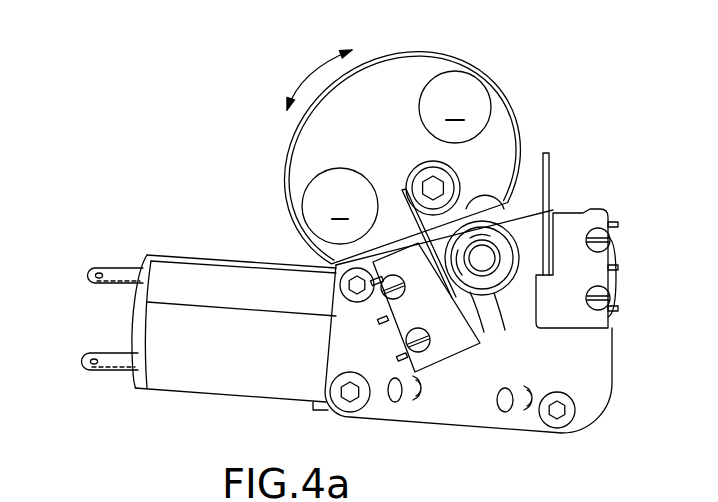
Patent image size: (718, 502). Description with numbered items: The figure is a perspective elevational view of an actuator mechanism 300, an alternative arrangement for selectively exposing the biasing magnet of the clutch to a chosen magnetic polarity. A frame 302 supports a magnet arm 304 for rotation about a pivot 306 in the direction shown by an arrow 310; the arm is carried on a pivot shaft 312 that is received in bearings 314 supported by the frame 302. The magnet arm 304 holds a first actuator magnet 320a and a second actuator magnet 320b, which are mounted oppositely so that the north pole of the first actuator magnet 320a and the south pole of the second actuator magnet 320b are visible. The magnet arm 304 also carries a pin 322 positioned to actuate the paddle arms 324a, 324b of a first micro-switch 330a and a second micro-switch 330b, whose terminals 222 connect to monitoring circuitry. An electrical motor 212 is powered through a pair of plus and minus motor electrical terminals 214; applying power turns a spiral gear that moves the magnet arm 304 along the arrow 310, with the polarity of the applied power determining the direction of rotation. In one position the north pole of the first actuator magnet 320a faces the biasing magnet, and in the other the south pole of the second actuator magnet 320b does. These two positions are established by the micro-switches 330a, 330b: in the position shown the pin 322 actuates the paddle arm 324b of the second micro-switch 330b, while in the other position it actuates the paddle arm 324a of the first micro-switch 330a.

The motor 212 is at (213, 398).
The motor electrical terminals 214 is at (88, 267).
The terminals 222 is at (622, 268).
The actuator mechanism 300 is at (600, 125).
The frame 302 is at (612, 364).
The magnet arm 304 is at (510, 95).
The pivot 306 is at (507, 300).
The arrow 310 is at (312, 78).
The pivot shaft 312 is at (483, 257).
The bearings 314 is at (484, 332).
The first actuator magnet 320a is at (483, 68).
The second actuator magnet 320b is at (300, 197).
The pin 322 is at (465, 190).
The paddle arm 324a is at (549, 178).
The paddle arm 324b is at (403, 208).
The first micro-switch 330a is at (610, 213).
The second micro-switch 330b is at (430, 400).